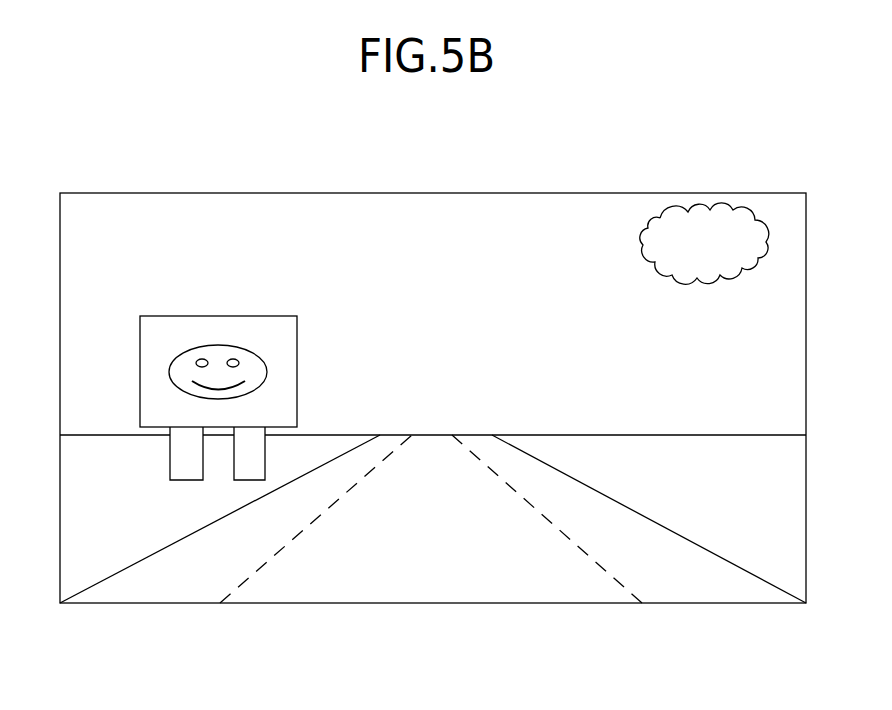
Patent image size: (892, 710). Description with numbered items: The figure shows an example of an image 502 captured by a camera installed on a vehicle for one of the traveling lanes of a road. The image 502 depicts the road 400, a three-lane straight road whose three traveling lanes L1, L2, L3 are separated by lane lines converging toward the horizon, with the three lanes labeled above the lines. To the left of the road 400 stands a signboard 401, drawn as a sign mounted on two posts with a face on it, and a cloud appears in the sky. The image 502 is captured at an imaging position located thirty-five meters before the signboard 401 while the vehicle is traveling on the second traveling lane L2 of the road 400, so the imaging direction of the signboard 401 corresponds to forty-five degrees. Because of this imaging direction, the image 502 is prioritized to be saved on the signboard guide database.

The image 502 is at (727, 193).
The signboard 401 is at (262, 316).
The road 400 is at (433, 482).
The traveling lane L1 is at (388, 445).
The second traveling lane L2 is at (440, 445).
The traveling lane L3 is at (492, 445).